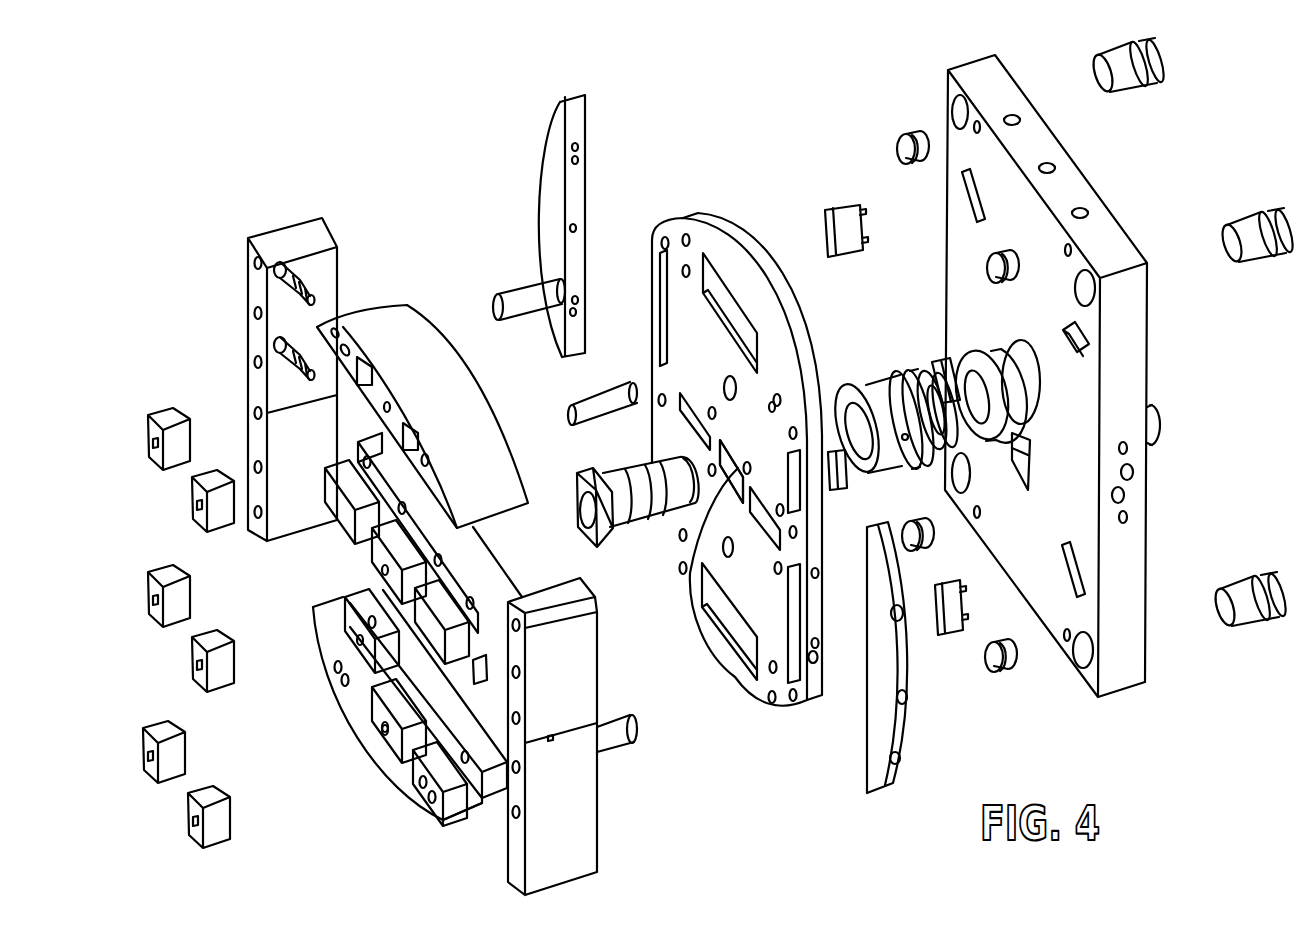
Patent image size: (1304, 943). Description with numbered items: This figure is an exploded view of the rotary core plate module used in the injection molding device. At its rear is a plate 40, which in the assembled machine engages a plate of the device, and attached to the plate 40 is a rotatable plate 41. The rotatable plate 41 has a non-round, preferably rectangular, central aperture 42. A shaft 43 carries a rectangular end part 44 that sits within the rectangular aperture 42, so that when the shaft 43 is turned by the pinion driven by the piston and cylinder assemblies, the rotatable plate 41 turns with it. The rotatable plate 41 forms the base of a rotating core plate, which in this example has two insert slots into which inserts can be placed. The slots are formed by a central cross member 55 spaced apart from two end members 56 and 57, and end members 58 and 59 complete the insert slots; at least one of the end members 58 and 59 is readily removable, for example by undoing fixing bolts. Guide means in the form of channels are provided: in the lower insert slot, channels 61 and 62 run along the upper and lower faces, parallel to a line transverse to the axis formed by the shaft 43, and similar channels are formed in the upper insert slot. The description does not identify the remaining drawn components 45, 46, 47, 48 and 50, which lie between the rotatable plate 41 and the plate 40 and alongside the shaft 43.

The plate 40 is at (1120, 311).
The rotatable plate 41 is at (767, 687).
The central aperture 42 is at (728, 480).
The shaft 43 is at (642, 478).
The rectangular end part 44 is at (610, 540).
The bearing housing 45 is at (880, 397).
The spacer ring 46 is at (916, 368).
The bearing 47 is at (1000, 408).
The bearing bore 48 is at (1030, 377).
The support pin 50 is at (653, 365).
The central cross member 55 is at (470, 570).
The end member 56 is at (408, 362).
The end member 57 is at (413, 790).
The end member 58 is at (298, 495).
The end member 59 is at (560, 843).
The channel 61 is at (490, 678).
The channel 62 is at (473, 813).